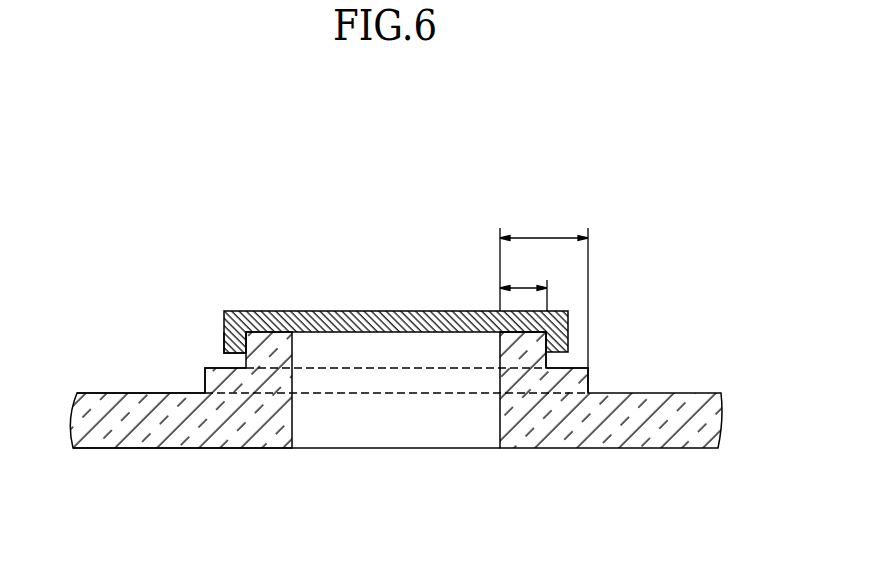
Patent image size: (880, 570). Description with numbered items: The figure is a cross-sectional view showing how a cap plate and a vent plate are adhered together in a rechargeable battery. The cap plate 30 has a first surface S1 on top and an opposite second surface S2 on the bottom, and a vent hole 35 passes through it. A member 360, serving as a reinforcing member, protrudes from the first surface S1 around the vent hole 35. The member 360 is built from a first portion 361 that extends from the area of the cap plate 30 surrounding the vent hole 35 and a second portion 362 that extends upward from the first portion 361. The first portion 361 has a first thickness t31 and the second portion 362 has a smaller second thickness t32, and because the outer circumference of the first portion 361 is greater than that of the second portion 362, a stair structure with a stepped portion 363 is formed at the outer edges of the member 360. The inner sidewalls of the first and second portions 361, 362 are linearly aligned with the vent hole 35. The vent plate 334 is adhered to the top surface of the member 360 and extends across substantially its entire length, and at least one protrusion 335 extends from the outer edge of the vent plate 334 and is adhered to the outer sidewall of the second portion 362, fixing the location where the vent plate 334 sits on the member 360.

The cap plate 30 is at (645, 432).
The vent hole 35 is at (387, 444).
The vent plate 334 is at (326, 322).
The protrusion 335 is at (233, 347).
The member 360 is at (639, 341).
The first portion 361 is at (562, 381).
The second portion 362 is at (531, 342).
The stepped portion 363 is at (203, 369).
The first surface S1 is at (123, 381).
The second surface S2 is at (132, 463).
The first thickness t31 is at (544, 284).
The second thickness t32 is at (523, 282).